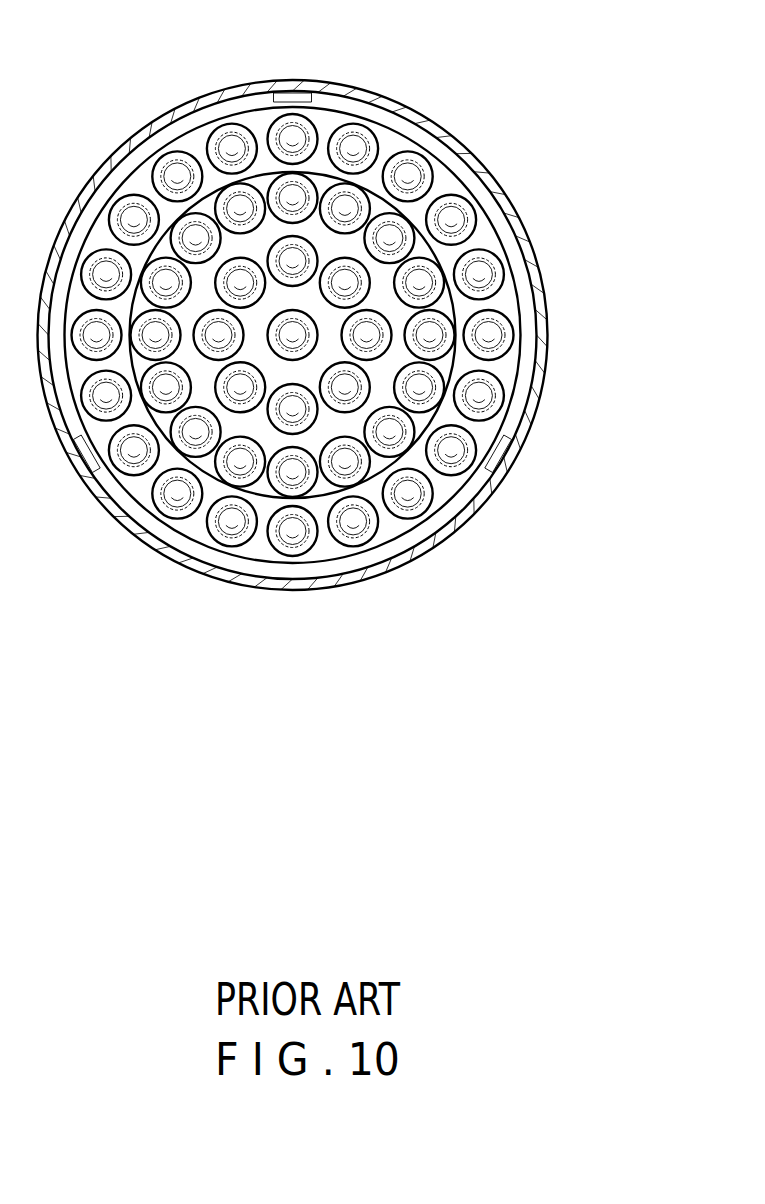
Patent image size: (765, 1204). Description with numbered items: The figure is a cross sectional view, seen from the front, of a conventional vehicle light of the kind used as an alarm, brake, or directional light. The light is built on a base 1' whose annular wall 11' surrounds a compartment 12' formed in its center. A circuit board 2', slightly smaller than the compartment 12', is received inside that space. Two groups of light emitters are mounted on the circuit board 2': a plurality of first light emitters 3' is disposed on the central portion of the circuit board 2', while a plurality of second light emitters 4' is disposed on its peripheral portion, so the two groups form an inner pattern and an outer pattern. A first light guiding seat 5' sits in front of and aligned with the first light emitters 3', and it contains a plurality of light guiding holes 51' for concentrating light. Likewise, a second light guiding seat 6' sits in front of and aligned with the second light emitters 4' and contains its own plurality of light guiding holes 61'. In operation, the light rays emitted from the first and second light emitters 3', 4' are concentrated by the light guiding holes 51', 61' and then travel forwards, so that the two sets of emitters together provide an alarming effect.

The base 1' is at (337, 335).
The annular wall 11' is at (296, 308).
The compartment 12' is at (304, 334).
The circuit board 2' is at (293, 254).
The first light emitters 3' is at (214, 122).
The second light emitters 4' is at (293, 82).
The first light guiding seat 5' is at (226, 115).
The light guiding holes 51' is at (244, 107).
The second light guiding seat 6' is at (303, 78).
The light guiding holes 61' is at (324, 51).